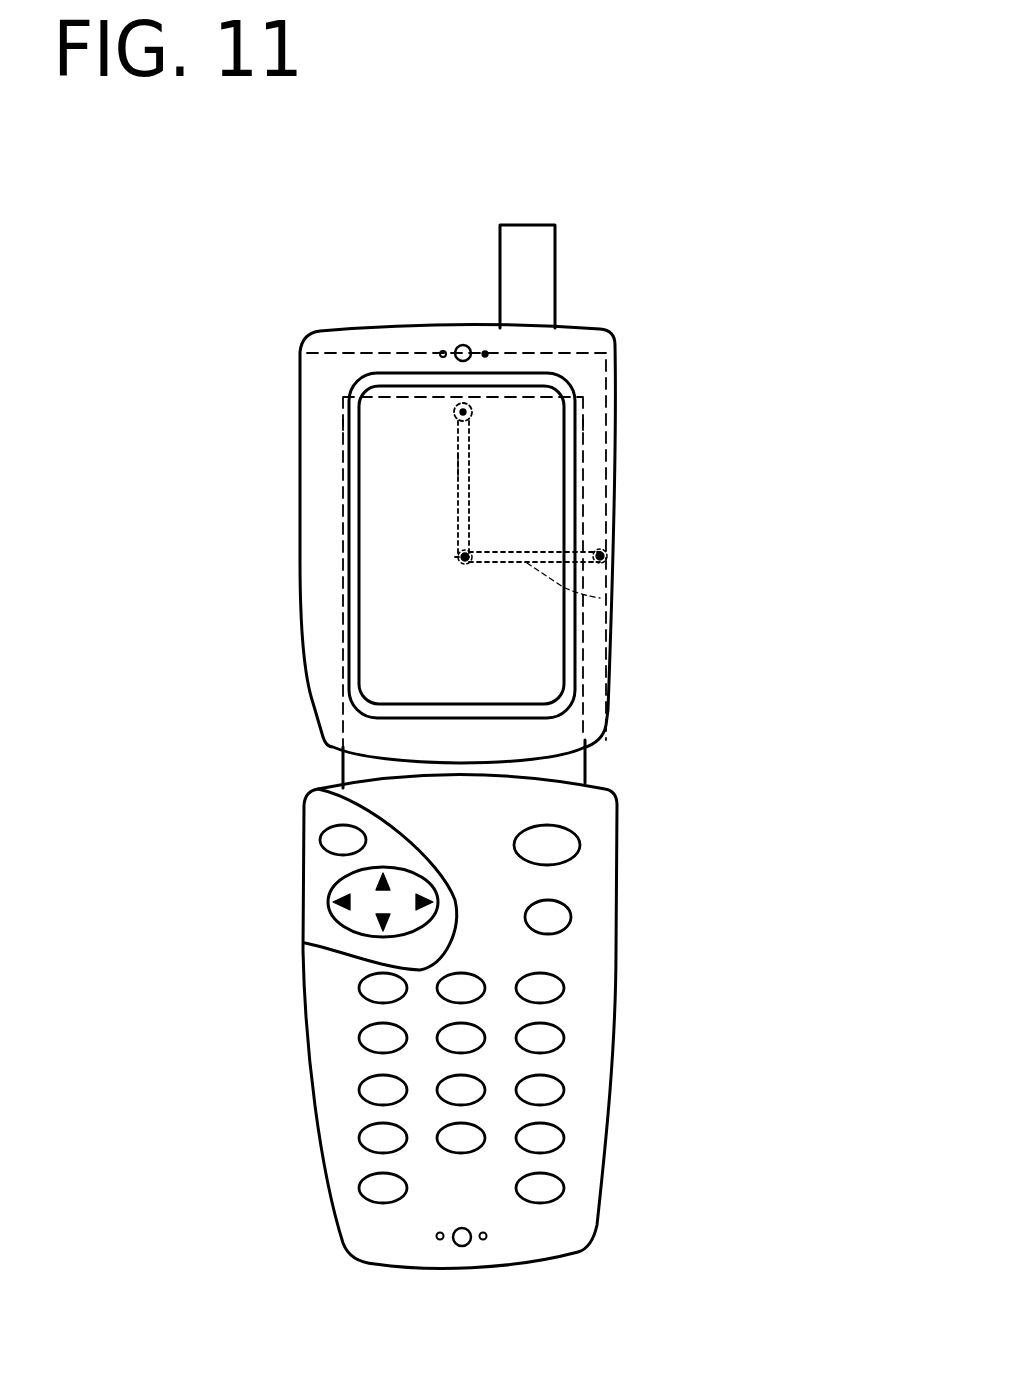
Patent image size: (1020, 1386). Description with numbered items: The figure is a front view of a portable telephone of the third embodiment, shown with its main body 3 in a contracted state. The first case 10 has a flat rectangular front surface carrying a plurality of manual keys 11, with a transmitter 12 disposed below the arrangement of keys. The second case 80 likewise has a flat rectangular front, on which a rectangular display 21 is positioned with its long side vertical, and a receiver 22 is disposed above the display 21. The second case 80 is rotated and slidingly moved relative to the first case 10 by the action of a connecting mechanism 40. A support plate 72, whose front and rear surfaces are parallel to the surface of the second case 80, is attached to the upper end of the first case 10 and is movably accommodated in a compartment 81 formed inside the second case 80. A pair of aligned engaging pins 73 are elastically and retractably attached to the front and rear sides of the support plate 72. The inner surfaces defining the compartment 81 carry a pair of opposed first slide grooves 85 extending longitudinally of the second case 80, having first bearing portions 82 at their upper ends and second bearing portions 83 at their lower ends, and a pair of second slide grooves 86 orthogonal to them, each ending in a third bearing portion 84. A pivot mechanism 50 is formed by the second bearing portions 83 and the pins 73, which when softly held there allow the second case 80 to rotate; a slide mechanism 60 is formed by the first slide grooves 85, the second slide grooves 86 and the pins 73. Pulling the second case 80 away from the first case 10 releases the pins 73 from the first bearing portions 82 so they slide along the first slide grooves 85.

The main body 3 is at (128, 198).
The first case 10 is at (590, 1050).
The manual keys 11 is at (562, 918).
The transmitter 12 is at (463, 1233).
The display 21 is at (380, 620).
The receiver 22 is at (468, 348).
The connecting mechanism 40 is at (170, 500).
The pivot mechanism 50 is at (450, 557).
The slide mechanism 60 is at (463, 464).
The support plate 72 is at (575, 772).
The engaging pins 73 is at (463, 410).
The second case 80 is at (400, 333).
The compartment 81 is at (313, 353).
The first bearing portions 82 is at (463, 410).
The second bearing portions 83 is at (465, 562).
The third bearing portions 84 is at (605, 550).
The first slide grooves 85 is at (463, 464).
The second slide grooves 86 is at (605, 560).